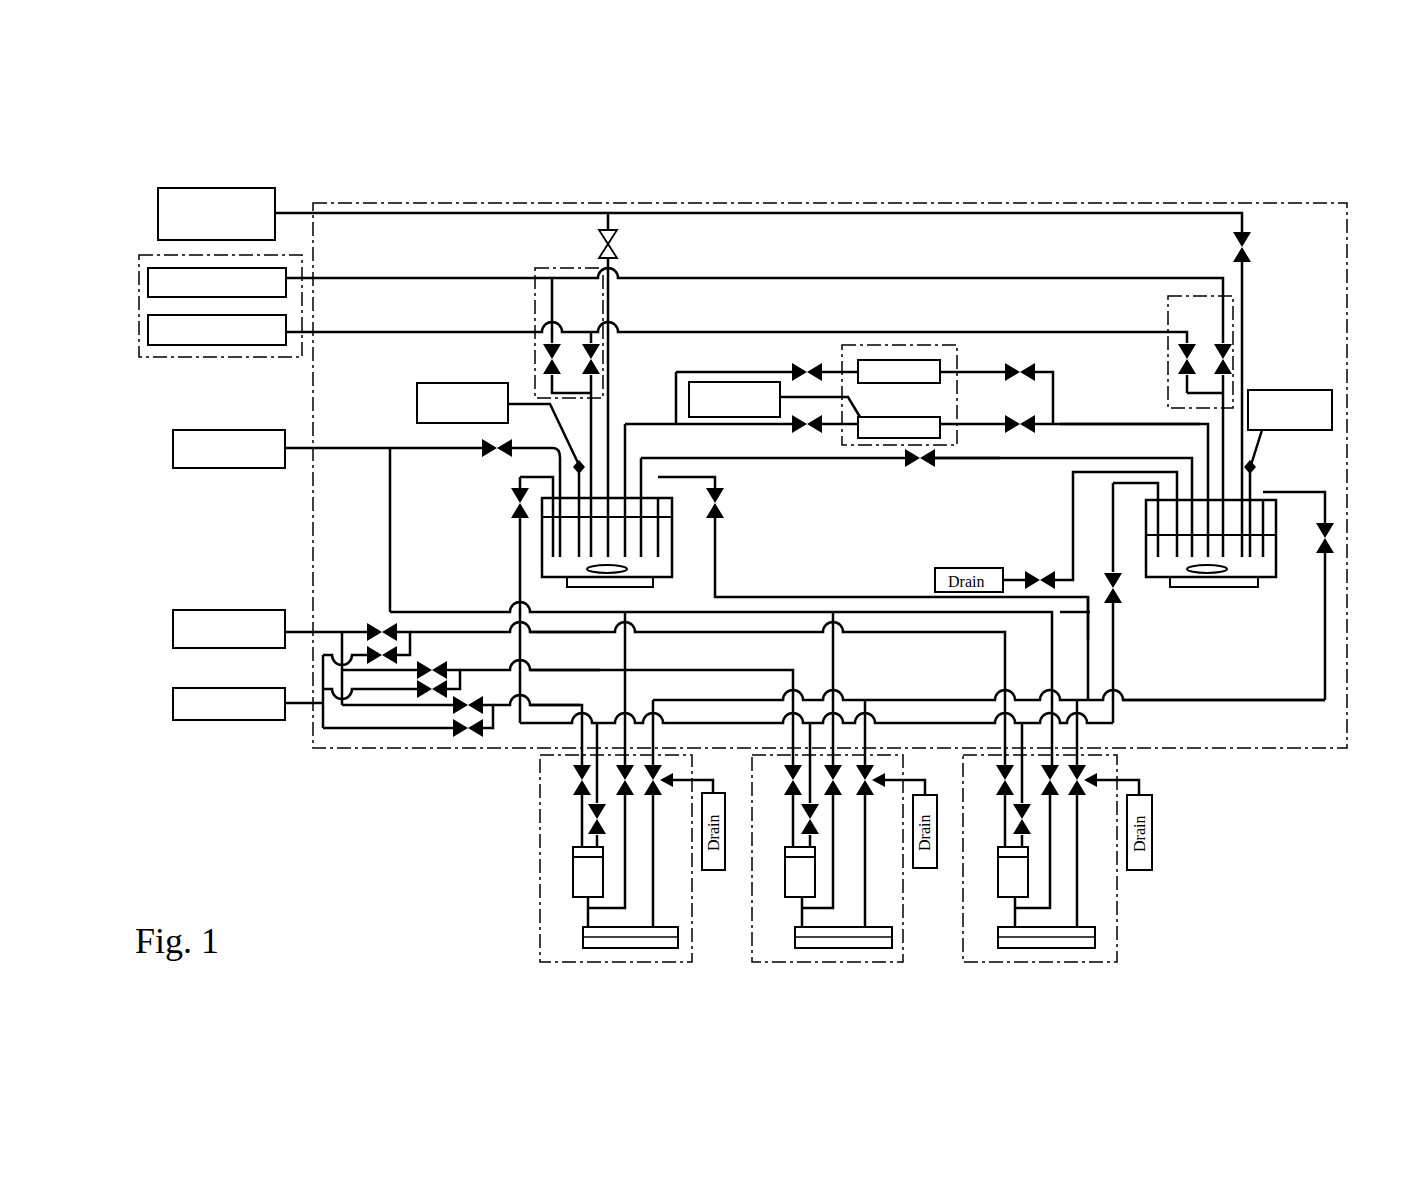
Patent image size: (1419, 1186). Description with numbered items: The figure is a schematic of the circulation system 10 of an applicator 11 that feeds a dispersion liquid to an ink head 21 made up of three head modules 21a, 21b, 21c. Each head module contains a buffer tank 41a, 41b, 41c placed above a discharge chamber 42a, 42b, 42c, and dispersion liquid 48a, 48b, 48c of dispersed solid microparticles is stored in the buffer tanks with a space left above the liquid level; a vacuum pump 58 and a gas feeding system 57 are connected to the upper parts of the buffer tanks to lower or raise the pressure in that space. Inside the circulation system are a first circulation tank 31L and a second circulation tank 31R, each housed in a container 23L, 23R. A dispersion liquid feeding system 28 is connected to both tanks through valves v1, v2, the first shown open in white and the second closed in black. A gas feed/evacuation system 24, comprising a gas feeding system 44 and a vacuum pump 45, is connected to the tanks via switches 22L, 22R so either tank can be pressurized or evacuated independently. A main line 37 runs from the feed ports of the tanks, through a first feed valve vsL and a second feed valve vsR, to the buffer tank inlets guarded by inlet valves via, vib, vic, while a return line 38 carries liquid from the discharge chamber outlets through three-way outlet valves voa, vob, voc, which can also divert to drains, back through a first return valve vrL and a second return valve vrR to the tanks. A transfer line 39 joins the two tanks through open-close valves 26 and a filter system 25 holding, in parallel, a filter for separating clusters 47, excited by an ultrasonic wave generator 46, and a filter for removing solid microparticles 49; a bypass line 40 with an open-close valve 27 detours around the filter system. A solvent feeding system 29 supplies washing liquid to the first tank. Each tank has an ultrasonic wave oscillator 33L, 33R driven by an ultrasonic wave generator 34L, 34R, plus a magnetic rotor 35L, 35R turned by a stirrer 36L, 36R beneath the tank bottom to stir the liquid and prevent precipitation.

The circulation system 10 is at (412, 203).
The applicator 11 is at (224, 172).
The dispersion liquid feeding system 28 is at (278, 188).
The gas feed/evacuation system 24 is at (226, 357).
The gas feeding system 44 is at (288, 272).
The vacuum pump 45 is at (288, 322).
The solvent feeding system 29 is at (197, 470).
The gas feeding system 57 is at (233, 610).
The vacuum pump 58 is at (226, 720).
The valve v1 is at (612, 244).
The valve v2 is at (1236, 245).
The switch 22L is at (535, 305).
The switch 22R is at (1168, 308).
The ultrasonic wave generator 34L is at (417, 397).
The ultrasonic wave generator 34R is at (1283, 390).
The ultrasonic wave generator 46 is at (737, 382).
The ultrasonic wave oscillator 33L is at (560, 470).
The ultrasonic wave oscillator 33R is at (1258, 468).
The open-close valve 26 is at (800, 362).
The filter system 25 is at (957, 365).
The filter for removing solid microparticles 49 is at (877, 360).
The filter for separating clusters 47 is at (880, 438).
The open-close valve 27 is at (920, 470).
The bypass line 40 is at (963, 470).
The transfer line 39 is at (1100, 423).
The container 23L is at (674, 527).
The container 23R is at (1152, 563).
The first circulation tank 31L is at (674, 560).
The second circulation tank 31R is at (1148, 527).
The rotor 35L is at (620, 570).
The rotor 35R is at (1210, 575).
The stirrer 36L is at (567, 580).
The stirrer 36R is at (1255, 590).
The first feed valve vsL is at (514, 508).
The second feed valve vsR is at (1118, 600).
The first return valve vrL is at (722, 505).
The second return valve vrR is at (1320, 553).
The main line 37 is at (522, 648).
The return line 38 is at (1243, 703).
The ink head 21 is at (405, 888).
The head module 21a is at (540, 908).
The head module 21b is at (752, 905).
The head module 21c is at (1117, 910).
The outlet valve voa is at (656, 772).
The outlet valve vob is at (868, 772).
The outlet valve voc is at (1082, 772).
The inlet valve via is at (592, 818).
The inlet valve vib is at (800, 815).
The inlet valve vic is at (1012, 815).
The buffer tank 41a is at (573, 880).
The buffer tank 41b is at (785, 880).
The buffer tank 41c is at (1028, 880).
The dispersion liquid 48a is at (573, 851).
The dispersion liquid 48b is at (815, 880).
The dispersion liquid 48c is at (998, 885).
The discharge chamber 42a is at (581, 947).
The discharge chamber 42b is at (793, 947).
The discharge chamber 42c is at (1097, 947).